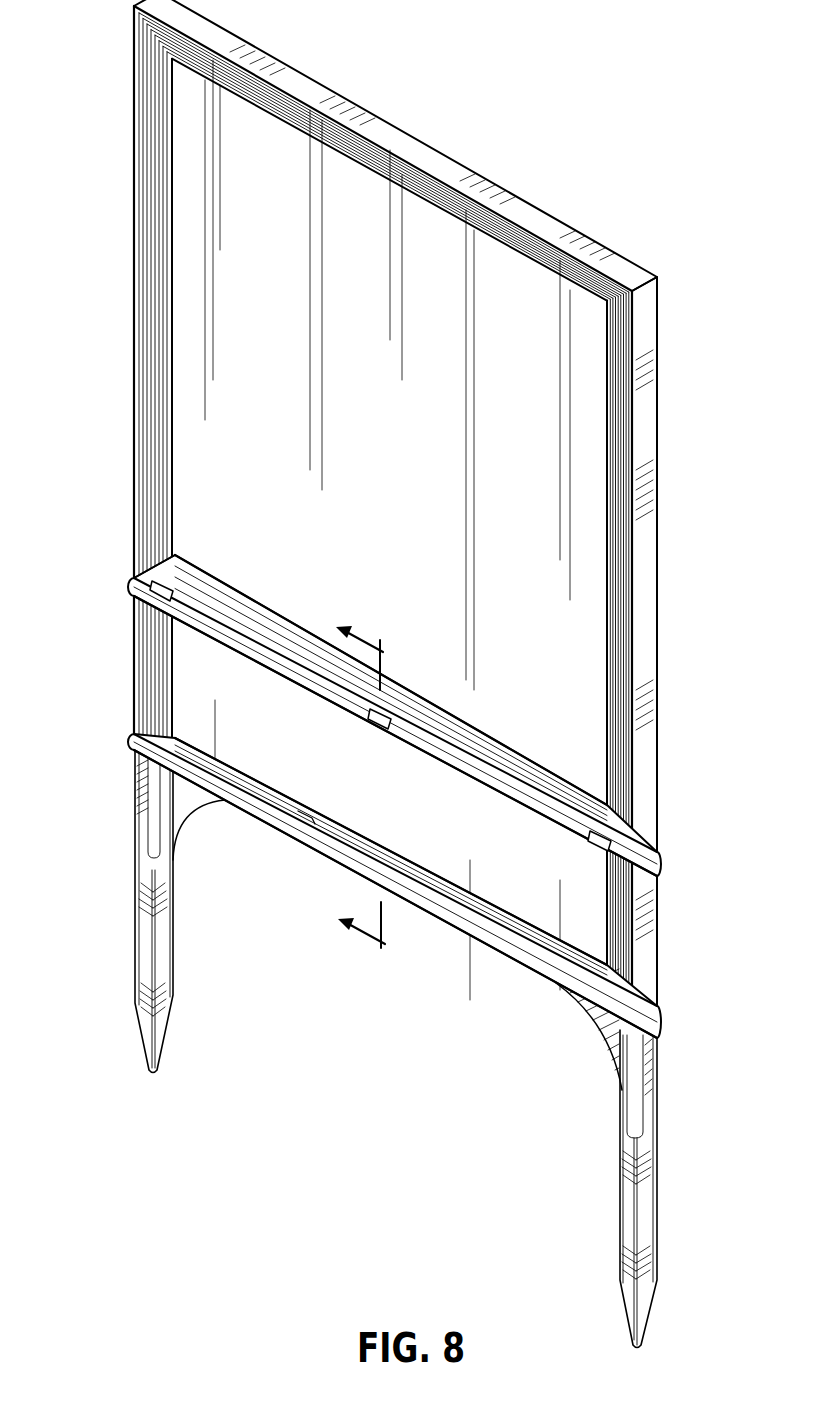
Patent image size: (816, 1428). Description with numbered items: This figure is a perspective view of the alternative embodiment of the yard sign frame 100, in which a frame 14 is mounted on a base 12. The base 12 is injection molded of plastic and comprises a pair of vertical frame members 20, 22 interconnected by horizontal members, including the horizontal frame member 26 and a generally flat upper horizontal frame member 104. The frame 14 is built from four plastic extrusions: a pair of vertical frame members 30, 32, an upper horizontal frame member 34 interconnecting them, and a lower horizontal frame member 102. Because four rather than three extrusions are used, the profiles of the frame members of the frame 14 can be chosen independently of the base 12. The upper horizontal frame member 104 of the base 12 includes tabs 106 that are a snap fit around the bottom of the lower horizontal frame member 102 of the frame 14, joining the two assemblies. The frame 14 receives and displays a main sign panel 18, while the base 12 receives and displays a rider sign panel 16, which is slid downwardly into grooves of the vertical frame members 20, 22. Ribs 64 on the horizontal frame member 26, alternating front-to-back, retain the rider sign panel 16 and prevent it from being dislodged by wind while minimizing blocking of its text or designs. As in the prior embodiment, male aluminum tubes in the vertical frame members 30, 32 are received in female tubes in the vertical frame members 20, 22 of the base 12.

The yard sign frame 100 is at (606, 130).
The base 12 is at (663, 960).
The frame 14 is at (662, 487).
The rider sign panel 16 is at (204, 905).
The main sign panel 18 is at (452, 362).
The vertical frame member 20 is at (658, 1178).
The vertical frame member 22 is at (134, 954).
The horizontal frame member 26 is at (463, 936).
The vertical frame member 30 is at (653, 599).
The vertical frame member 32 is at (132, 322).
The horizontal frame member 34 is at (372, 119).
The rib 64 is at (295, 805).
The lower horizontal frame member 102 is at (468, 736).
The upper horizontal frame member 104 is at (205, 839).
The tab 106 is at (160, 580).